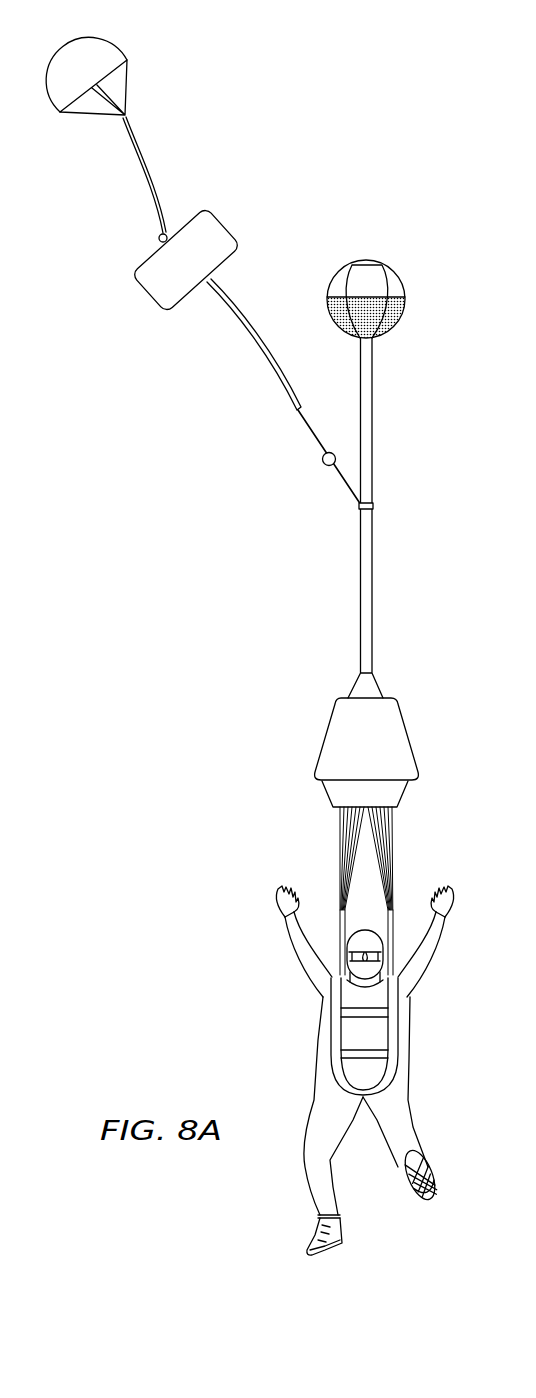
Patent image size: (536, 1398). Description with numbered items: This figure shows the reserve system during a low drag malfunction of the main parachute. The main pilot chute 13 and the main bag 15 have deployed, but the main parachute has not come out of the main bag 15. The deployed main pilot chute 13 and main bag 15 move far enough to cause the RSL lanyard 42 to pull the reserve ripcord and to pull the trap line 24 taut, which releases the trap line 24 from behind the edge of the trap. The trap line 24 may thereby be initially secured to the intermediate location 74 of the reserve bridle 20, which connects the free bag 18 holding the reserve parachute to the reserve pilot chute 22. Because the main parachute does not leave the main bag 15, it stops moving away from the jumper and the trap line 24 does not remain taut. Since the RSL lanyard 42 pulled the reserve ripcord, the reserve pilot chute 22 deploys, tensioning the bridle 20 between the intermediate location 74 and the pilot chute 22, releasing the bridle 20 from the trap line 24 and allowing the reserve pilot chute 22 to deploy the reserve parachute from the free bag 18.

The main pilot chute 13 is at (110, 43).
The main bag 15 is at (145, 298).
The free bag 18 is at (402, 730).
The reserve bridle 20 is at (372, 400).
The reserve pilot chute 22 is at (403, 283).
The trap line 24 is at (342, 488).
The RSL lanyard 42 is at (310, 435).
The intermediate location 74 is at (373, 507).